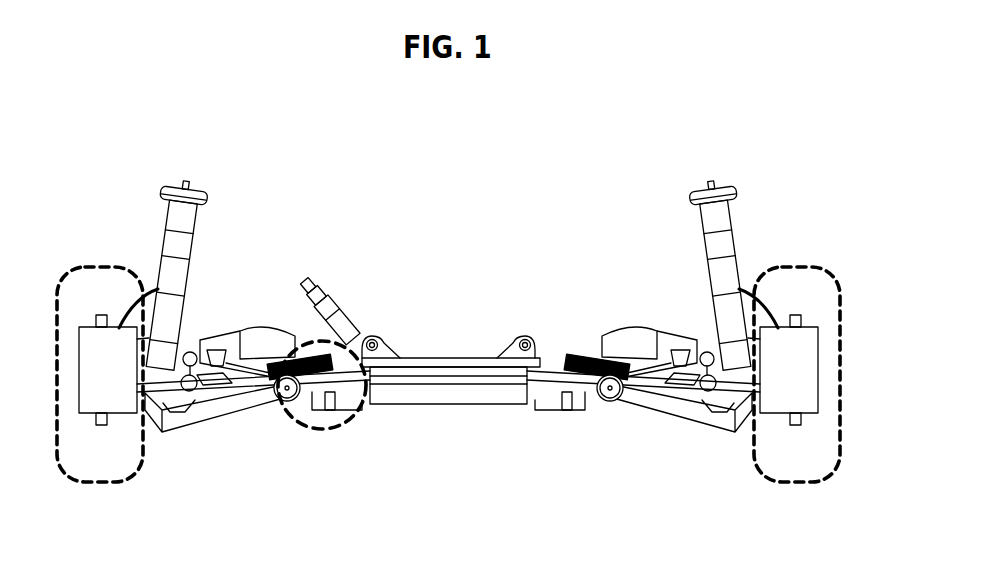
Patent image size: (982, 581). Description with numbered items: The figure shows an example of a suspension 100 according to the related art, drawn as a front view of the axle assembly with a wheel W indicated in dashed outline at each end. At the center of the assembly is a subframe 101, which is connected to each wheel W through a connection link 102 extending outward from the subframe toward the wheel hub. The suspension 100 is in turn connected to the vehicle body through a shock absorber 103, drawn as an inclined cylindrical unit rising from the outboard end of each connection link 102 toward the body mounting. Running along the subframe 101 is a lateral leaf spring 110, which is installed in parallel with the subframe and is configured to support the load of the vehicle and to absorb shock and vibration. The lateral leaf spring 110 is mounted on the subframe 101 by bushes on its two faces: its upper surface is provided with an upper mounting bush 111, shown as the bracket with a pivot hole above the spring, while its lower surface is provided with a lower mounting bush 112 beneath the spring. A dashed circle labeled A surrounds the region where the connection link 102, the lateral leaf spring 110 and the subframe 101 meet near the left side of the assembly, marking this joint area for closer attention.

The suspension 100 is at (757, 119).
The subframe 101 is at (462, 395).
The connection link 102 is at (213, 413).
The shock absorber 103 is at (167, 270).
The lateral leaf spring 110 is at (425, 382).
The upper mounting bush 111 is at (483, 377).
The lower mounting bush 112 is at (507, 393).
The wheel W is at (98, 483).
The detail region A is at (322, 398).